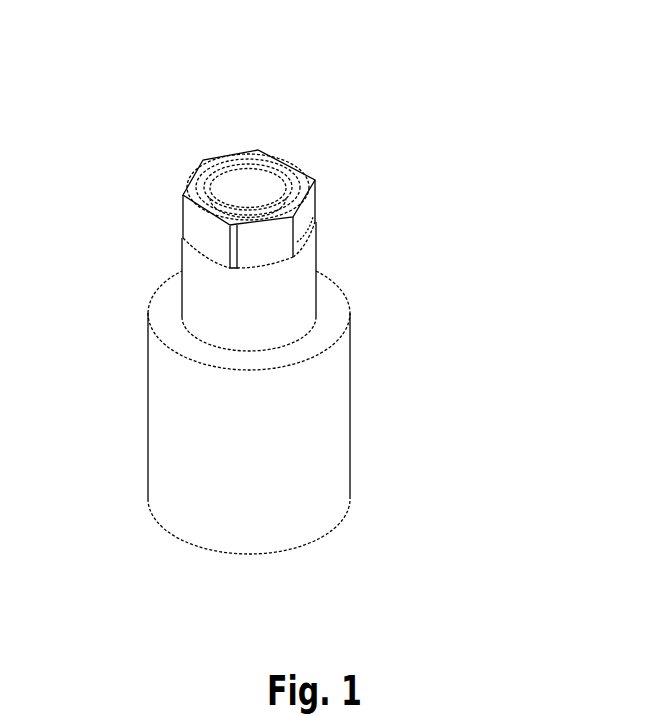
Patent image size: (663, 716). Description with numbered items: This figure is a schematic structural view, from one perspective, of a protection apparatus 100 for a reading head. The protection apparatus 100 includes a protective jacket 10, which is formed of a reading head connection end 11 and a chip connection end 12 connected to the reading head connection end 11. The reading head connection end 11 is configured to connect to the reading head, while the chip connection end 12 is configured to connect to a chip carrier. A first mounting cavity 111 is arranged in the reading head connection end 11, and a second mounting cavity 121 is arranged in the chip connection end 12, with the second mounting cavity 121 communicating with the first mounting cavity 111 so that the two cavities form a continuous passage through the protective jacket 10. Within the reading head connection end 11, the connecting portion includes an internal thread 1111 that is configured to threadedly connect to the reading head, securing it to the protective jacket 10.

The protection apparatus 100 is at (73, 27).
The protective jacket 10 is at (497, 200).
The reading head connection end 11 is at (308, 265).
The first mounting cavity 111 is at (253, 191).
The internal thread 1111 is at (226, 192).
The chip connection end 12 is at (318, 435).
The second mounting cavity 121 is at (241, 569).